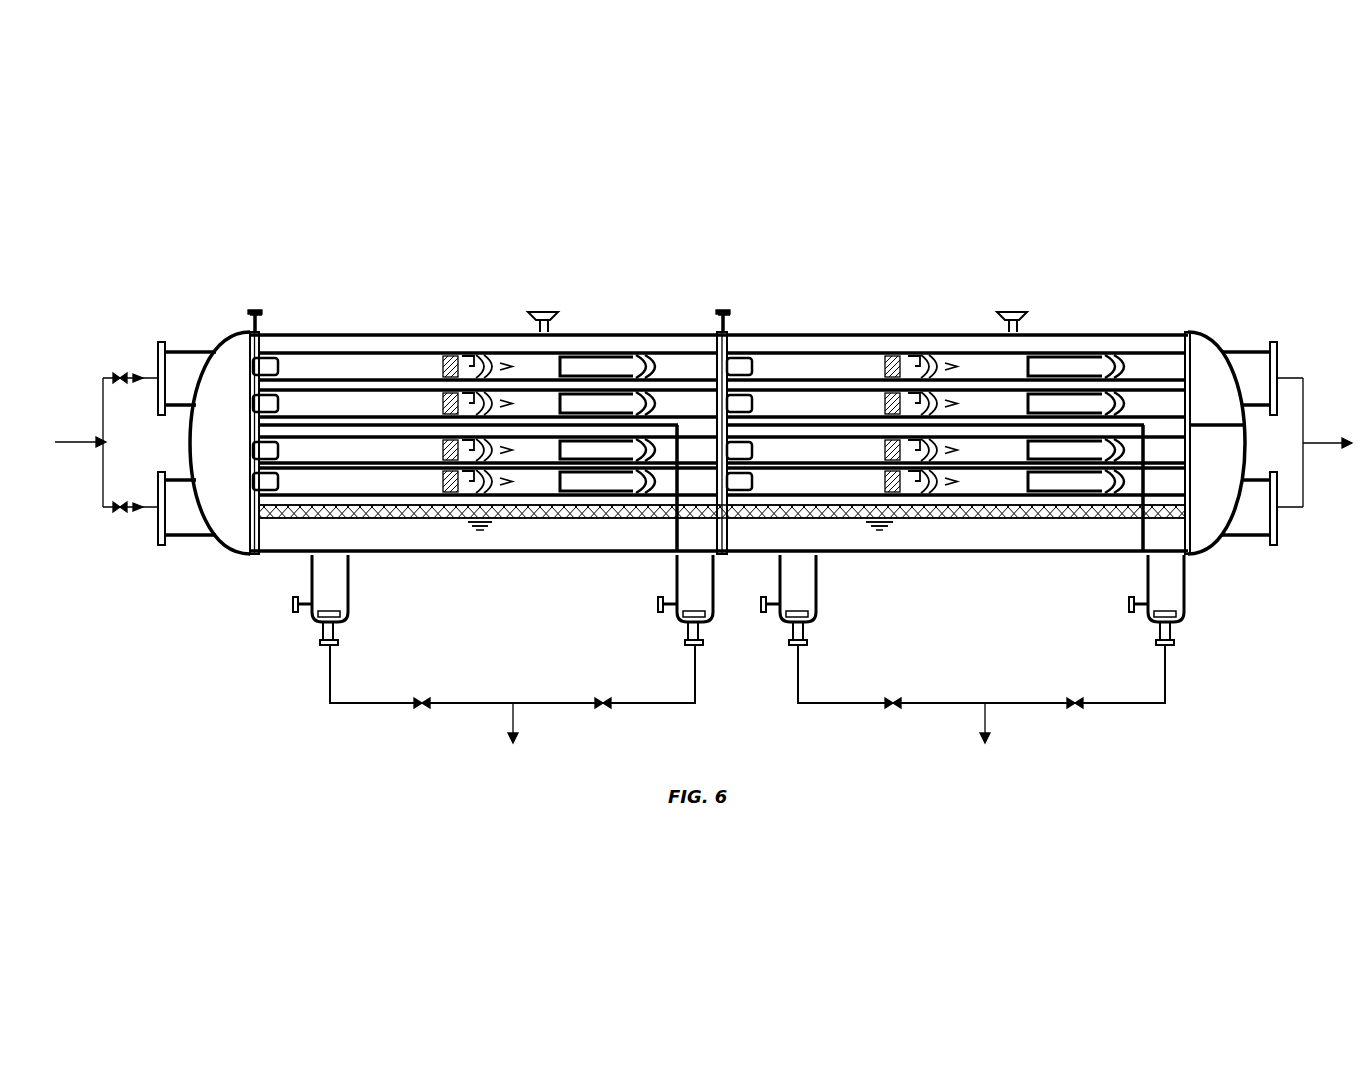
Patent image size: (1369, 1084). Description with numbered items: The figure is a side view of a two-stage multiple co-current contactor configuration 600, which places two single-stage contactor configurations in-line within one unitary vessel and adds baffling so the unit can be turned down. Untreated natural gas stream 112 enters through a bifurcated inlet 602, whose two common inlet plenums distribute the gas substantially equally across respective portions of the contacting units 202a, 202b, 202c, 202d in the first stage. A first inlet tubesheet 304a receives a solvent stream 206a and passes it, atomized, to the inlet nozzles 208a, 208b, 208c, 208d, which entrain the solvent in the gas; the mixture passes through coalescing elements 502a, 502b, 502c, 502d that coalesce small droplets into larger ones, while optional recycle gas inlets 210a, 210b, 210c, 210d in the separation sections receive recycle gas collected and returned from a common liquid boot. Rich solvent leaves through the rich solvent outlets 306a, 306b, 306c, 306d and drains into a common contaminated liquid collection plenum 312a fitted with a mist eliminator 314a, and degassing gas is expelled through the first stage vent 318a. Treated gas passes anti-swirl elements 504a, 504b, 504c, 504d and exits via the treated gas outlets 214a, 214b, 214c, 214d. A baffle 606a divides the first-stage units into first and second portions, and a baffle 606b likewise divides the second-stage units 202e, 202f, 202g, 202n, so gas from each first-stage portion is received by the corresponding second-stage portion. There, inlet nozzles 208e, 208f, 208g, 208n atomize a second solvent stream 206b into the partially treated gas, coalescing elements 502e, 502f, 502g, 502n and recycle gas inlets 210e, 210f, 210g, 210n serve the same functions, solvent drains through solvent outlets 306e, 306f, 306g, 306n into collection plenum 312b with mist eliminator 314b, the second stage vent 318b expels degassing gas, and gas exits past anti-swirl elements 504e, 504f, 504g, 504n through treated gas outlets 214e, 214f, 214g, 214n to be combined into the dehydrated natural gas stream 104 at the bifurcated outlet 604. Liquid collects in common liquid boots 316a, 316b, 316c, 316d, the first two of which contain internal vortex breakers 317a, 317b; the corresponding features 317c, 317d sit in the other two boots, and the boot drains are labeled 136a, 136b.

The two-stage multiple co-current contactor configuration 600 is at (188, 196).
The bifurcated inlet 602 is at (236, 334).
The bifurcated outlet 604 is at (1198, 335).
The baffle 606a is at (719, 552).
The baffle 606b is at (1150, 470).
The solvent stream 206a is at (255, 302).
The solvent stream 206b is at (723, 302).
The first stage vent 318a is at (548, 312).
The second stage vent 318b is at (1012, 312).
The first inlet tubesheet 304a is at (258, 540).
The mist eliminator 314a is at (277, 522).
The mist eliminator 314b is at (948, 518).
The common contaminated liquid collection plenum 312a is at (508, 540).
The common contaminated liquid collection plenum 312b is at (988, 540).
The natural gas stream 112 is at (80, 464).
The dehydrated and/or decontaminated natural gas stream 104 is at (1322, 447).
The first drain outlet 136a is at (512, 738).
The second drain outlet 136b is at (983, 738).
The contacting unit 202a is at (412, 354).
The contacting unit 202b is at (365, 391).
The contacting unit 202c is at (343, 464).
The contacting unit 202d is at (385, 497).
The contacting unit 202e is at (860, 354).
The contacting unit 202f is at (820, 391).
The contacting unit 202g is at (815, 464).
The contacting unit 202n is at (845, 497).
The inlet nozzle 208a is at (280, 359).
The inlet nozzle 208b is at (252, 398).
The inlet nozzle 208c is at (254, 449).
The inlet nozzle 208d is at (254, 480).
The inlet nozzle 208e is at (748, 359).
The inlet nozzle 208f is at (752, 398).
The inlet nozzle 208g is at (752, 446).
The inlet nozzle 208n is at (753, 491).
The recycle gas inlet 210a is at (456, 357).
The recycle gas inlet 210b is at (452, 393).
The recycle gas inlet 210c is at (449, 461).
The recycle gas inlet 210d is at (452, 496).
The recycle gas inlet 210e is at (900, 357).
The recycle gas inlet 210f is at (895, 393).
The recycle gas inlet 210g is at (892, 461).
The recycle gas inlet 210n is at (897, 496).
The treated gas outlet 214a is at (612, 357).
The treated gas outlet 214b is at (600, 394).
The treated gas outlet 214c is at (636, 462).
The treated gas outlet 214d is at (605, 496).
The treated gas outlet 214e is at (1085, 357).
The treated gas outlet 214f is at (1070, 394).
The treated gas outlet 214g is at (1105, 462).
The treated gas outlet 214n is at (1085, 496).
The rich solvent outlet 306a is at (510, 372).
The rich solvent outlet 306b is at (512, 418).
The rich solvent outlet 306c is at (512, 464).
The solvent outlet 306d is at (512, 496).
The solvent outlet 306e is at (955, 372).
The solvent outlet 306f is at (958, 418).
The solvent outlet 306g is at (958, 464).
The solvent outlet 306n is at (958, 496).
The coalescing element 502a is at (440, 367).
The coalescing element 502b is at (440, 404).
The coalescing element 502c is at (440, 450).
The coalescing element 502d is at (440, 482).
The coalescing element 502e is at (886, 367).
The coalescing element 502f is at (886, 404).
The coalescing element 502g is at (880, 450).
The coalescing element 502n is at (880, 482).
The anti-swirl element 504a is at (651, 356).
The anti-swirl element 504b is at (648, 388).
The anti-swirl element 504c is at (650, 438).
The anti-swirl element 504d is at (650, 496).
The anti-swirl element 504e is at (1121, 356).
The anti-swirl element 504f is at (1117, 388).
The anti-swirl element 504g is at (1118, 438).
The anti-swirl element 504n is at (1120, 496).
The common liquid boot 316a is at (342, 616).
The common liquid boot 316b is at (812, 616).
The common liquid boot 316c is at (706, 624).
The common liquid boot 316d is at (1178, 616).
The internal vortex breaker 317a is at (314, 626).
The internal vortex breaker 317b is at (800, 645).
The drain pot nozzle 317c is at (682, 630).
The drain pot nozzle 317d is at (1152, 630).